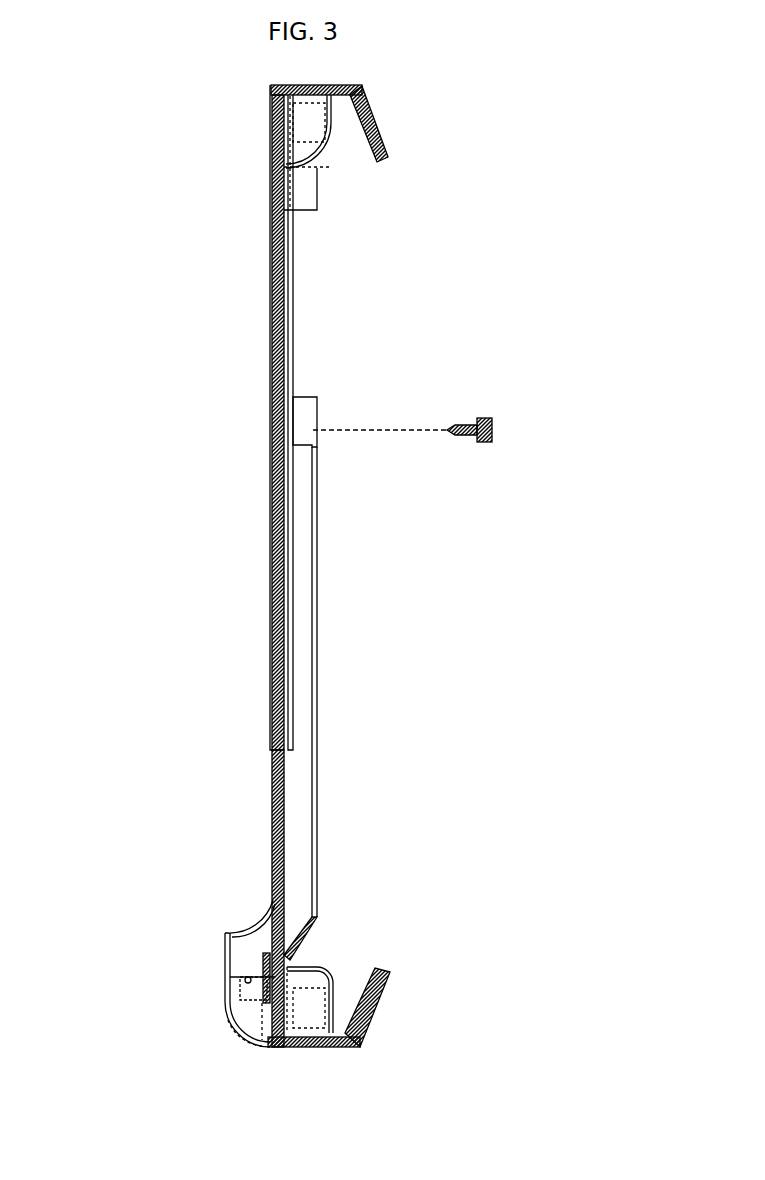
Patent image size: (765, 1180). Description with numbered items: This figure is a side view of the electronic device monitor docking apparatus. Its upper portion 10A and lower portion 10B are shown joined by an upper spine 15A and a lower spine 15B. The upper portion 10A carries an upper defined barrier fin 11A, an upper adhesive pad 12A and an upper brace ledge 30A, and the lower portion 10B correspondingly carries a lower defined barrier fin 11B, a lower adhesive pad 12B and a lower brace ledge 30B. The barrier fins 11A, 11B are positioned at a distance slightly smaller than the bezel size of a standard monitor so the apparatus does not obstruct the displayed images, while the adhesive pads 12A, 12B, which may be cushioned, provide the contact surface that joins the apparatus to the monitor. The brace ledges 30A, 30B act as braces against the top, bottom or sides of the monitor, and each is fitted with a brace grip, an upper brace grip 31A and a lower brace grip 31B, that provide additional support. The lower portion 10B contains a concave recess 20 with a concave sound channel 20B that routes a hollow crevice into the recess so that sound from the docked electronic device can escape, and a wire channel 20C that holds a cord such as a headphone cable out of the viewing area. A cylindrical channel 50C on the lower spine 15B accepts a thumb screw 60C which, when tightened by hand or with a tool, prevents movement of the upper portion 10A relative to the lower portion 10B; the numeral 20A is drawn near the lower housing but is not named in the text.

The upper portion 10A is at (272, 266).
The lower portion 10B is at (272, 812).
The upper defined barrier fin 11A is at (300, 153).
The lower defined barrier fin 11B is at (302, 980).
The upper adhesive pad 12A is at (303, 120).
The lower adhesive pad 12B is at (310, 1002).
The upper spine 15A is at (290, 355).
The lower spine 15B is at (313, 690).
The concave recess 20 is at (252, 952).
The housing bottom 20A is at (240, 1030).
The concave sound channel 20B is at (242, 977).
The wire channel 20C is at (264, 1003).
The upper brace ledge 30A is at (337, 86).
The lower brace ledge 30B is at (338, 1028).
The upper brace grip 31A is at (387, 160).
The lower brace grip 31B is at (390, 972).
The cylindrical channel 50C is at (302, 430).
The thumb screw 60C is at (487, 417).